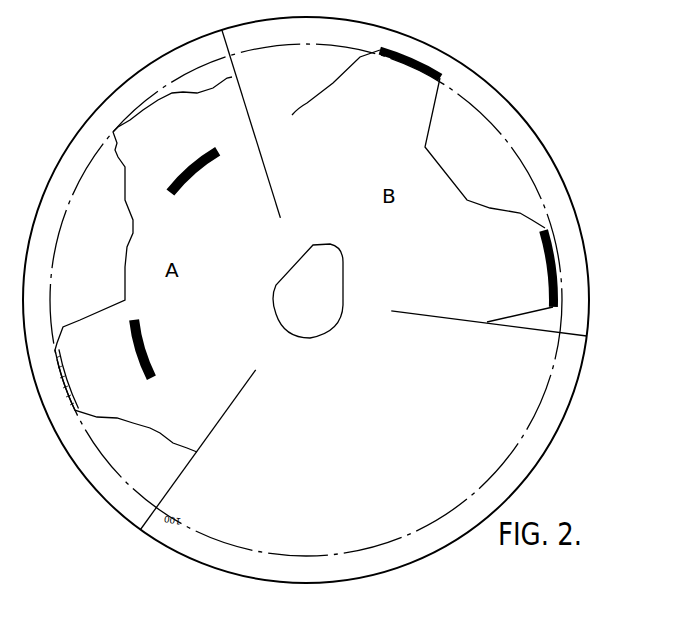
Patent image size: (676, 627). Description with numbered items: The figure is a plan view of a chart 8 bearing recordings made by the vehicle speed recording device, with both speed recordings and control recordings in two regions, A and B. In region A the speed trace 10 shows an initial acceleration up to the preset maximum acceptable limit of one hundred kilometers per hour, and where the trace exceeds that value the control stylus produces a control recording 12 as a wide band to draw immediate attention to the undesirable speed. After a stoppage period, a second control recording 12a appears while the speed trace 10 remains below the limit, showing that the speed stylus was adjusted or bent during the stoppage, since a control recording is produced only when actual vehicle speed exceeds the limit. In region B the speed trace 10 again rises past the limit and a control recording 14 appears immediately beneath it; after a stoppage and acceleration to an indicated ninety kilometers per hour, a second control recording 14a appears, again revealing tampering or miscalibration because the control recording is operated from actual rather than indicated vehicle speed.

The chart 8 is at (513, 417).
The speed recording trace 10 is at (125, 167).
The control recording 12 is at (152, 350).
The control recording 12a is at (210, 168).
The control recording 14 is at (425, 62).
The control recording 14a is at (545, 238).